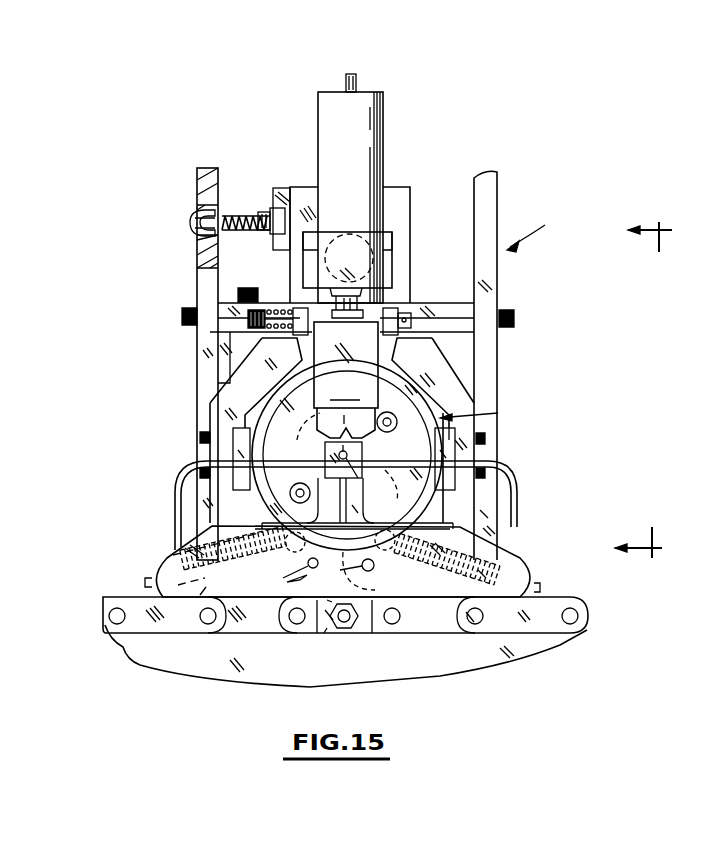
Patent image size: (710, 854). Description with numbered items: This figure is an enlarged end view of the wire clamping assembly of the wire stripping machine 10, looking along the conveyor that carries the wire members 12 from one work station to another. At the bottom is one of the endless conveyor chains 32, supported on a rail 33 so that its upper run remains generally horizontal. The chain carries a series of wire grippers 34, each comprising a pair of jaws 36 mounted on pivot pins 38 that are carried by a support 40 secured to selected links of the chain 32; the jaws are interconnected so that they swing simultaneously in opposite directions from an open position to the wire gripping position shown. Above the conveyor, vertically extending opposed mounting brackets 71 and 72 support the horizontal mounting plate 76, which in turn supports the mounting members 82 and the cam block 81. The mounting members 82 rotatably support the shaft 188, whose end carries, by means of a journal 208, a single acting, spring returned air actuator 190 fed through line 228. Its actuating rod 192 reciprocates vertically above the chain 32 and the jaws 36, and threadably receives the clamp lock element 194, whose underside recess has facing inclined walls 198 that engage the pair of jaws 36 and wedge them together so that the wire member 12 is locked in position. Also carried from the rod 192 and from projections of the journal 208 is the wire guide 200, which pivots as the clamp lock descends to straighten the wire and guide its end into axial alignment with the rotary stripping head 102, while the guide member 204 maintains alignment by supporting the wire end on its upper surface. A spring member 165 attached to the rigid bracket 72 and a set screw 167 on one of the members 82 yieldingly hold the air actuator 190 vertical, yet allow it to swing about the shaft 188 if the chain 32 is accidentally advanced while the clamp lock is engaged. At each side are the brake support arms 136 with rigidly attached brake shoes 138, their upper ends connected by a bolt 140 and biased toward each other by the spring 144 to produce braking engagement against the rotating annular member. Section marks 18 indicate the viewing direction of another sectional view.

The wire stripping machine 10 is at (536, 227).
The wire member 12 is at (352, 480).
The section line 18 is at (643, 386).
The conveyor chain 32 is at (548, 597).
The rail 33 is at (498, 652).
The wire gripper 34 is at (525, 563).
The jaw 36 is at (352, 448).
The pivot pin 38 is at (314, 575).
The support 40 is at (440, 597).
The mounting bracket 71 is at (497, 184).
The mounting bracket 72 is at (197, 179).
The horizontal mounting plate 76 is at (470, 300).
The cam block 81 is at (235, 348).
The mounting member 82 is at (410, 197).
The rotary stripping head 102 is at (490, 420).
The brake support arm 136 is at (222, 375).
The brake shoe 138 is at (243, 437).
The bolt 140 is at (248, 318).
The spring 144 is at (272, 308).
The spring member 165 is at (232, 214).
The set screw 167 is at (258, 210).
The shaft 188 is at (343, 240).
The air actuator 190 is at (383, 108).
The actuating rod 192 is at (365, 298).
The clamp lock element 194 is at (410, 338).
The inclined wall 198 is at (322, 400).
The wire guide 200 is at (352, 455).
The guide member 204 is at (517, 496).
The journal 208 is at (392, 252).
The line 228 is at (356, 82).